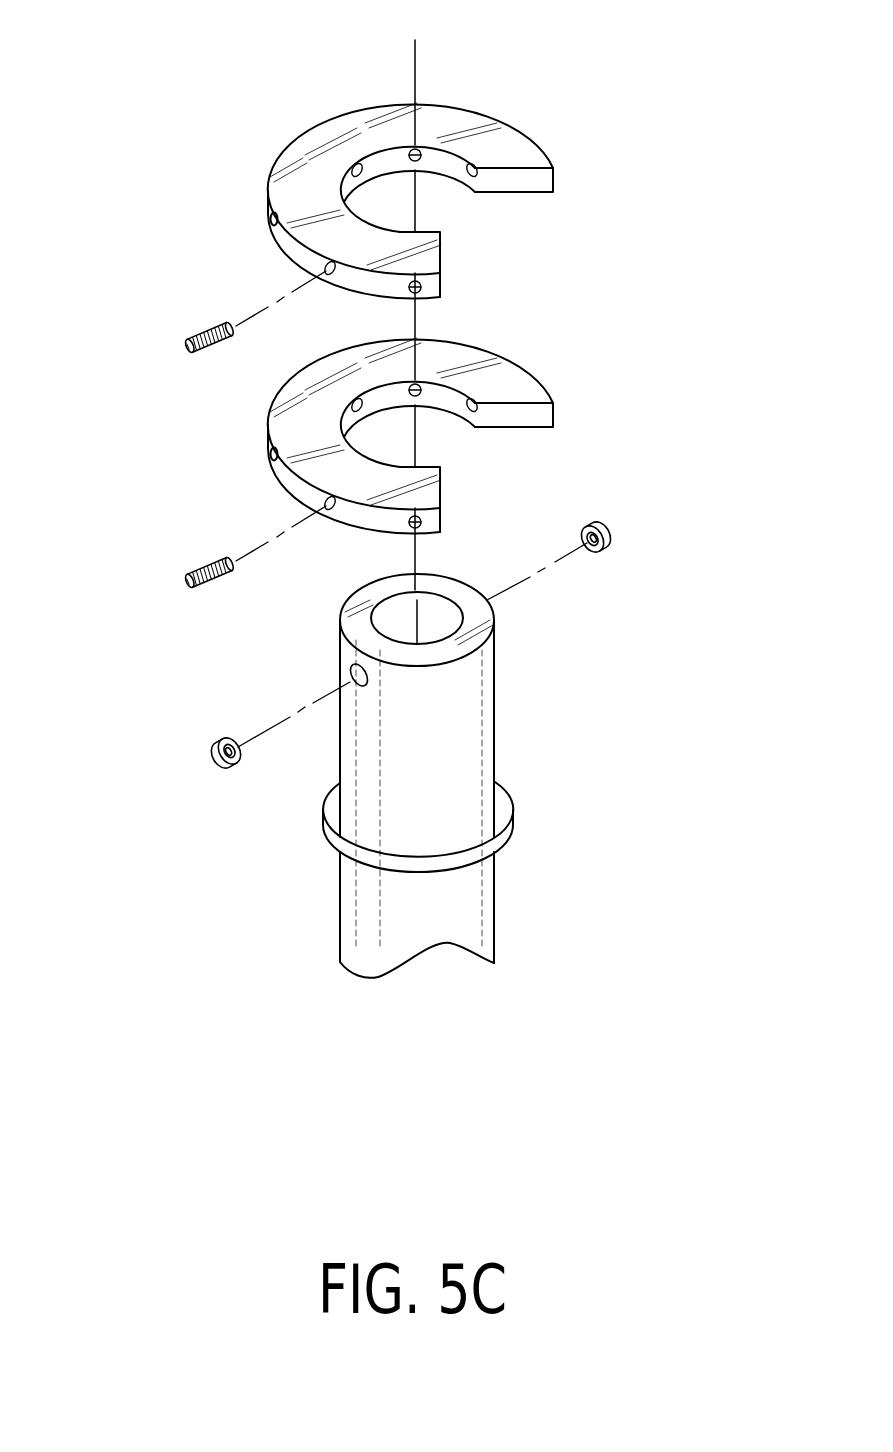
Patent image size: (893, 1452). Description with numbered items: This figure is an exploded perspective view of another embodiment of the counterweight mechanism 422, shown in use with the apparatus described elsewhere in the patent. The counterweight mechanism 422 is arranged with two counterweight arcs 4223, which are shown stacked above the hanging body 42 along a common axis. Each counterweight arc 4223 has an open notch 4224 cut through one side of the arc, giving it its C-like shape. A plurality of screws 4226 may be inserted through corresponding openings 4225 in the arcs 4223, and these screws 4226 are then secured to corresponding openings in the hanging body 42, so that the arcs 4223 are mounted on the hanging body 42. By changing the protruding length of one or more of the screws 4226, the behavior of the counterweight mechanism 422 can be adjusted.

The counterweight mechanism 422 is at (606, 106).
The counterweight arc 4223 is at (328, 140).
The open notch 4224 is at (475, 223).
The opening 4225 is at (276, 217).
The screw 4226 is at (194, 340).
The hanging body 42 is at (480, 736).